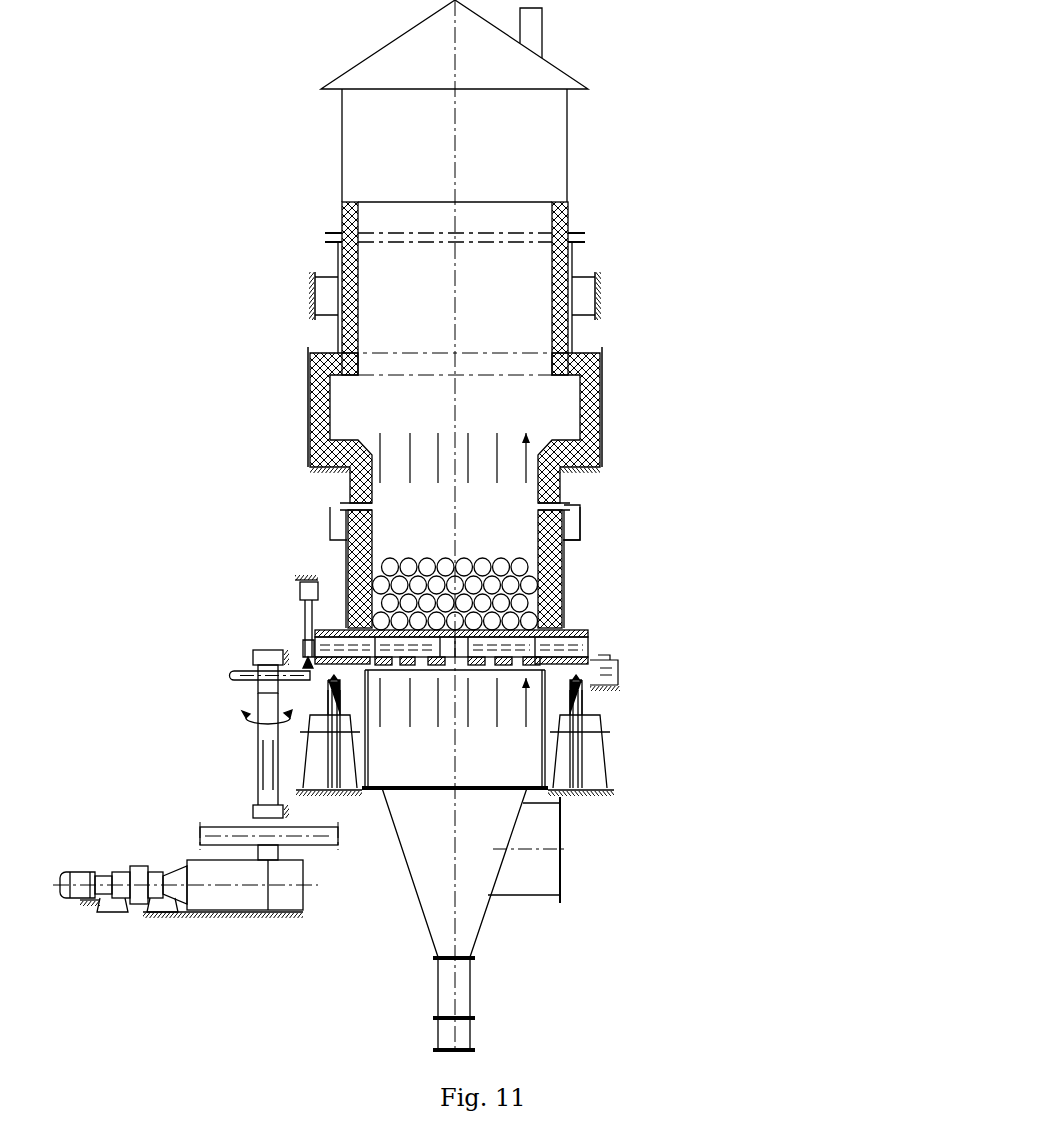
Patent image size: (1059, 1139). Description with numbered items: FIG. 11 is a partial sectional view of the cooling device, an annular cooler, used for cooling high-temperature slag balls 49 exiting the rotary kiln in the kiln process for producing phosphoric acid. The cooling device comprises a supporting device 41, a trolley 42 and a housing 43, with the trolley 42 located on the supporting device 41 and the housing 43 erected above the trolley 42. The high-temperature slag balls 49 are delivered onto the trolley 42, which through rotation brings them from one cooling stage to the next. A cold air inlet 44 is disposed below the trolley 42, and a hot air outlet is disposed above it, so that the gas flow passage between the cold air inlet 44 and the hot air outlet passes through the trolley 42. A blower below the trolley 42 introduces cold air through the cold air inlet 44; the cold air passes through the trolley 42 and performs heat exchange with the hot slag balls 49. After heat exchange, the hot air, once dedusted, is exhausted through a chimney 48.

The chimney 48 is at (490, 268).
The housing 43 is at (598, 412).
The high-temperature slag balls 49 is at (532, 585).
The trolley 42 is at (533, 642).
The supporting device 41 is at (772, 700).
The cold air inlet 44 is at (690, 849).